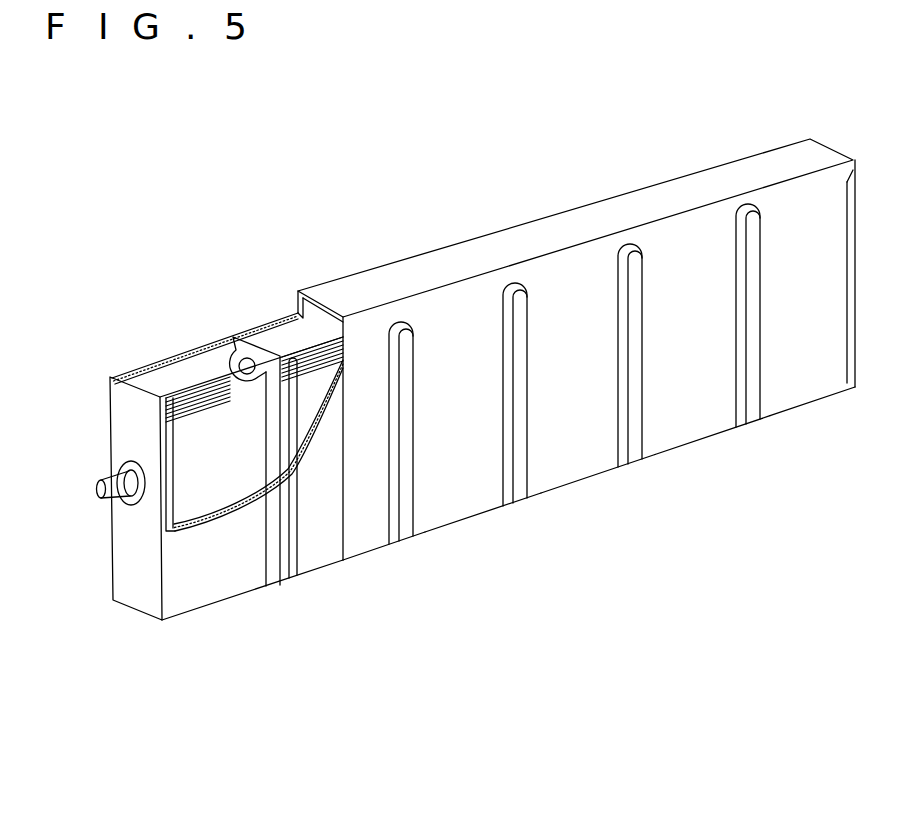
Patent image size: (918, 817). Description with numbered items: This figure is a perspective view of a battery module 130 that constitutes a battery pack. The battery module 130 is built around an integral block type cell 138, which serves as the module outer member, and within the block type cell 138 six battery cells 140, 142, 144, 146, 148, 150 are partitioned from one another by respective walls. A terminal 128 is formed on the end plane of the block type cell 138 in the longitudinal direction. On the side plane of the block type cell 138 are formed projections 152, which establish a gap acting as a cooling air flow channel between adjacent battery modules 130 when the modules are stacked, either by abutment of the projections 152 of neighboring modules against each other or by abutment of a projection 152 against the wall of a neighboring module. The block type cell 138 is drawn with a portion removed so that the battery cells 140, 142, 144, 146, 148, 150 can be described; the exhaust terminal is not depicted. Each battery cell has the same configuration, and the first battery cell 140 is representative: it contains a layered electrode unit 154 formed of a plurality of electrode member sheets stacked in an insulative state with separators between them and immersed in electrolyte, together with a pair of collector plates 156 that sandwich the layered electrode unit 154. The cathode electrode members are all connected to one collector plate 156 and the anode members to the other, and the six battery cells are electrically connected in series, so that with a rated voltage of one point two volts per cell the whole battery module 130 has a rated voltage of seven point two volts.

The terminal 128 is at (96, 499).
The battery module 130 is at (143, 680).
The block type cell 138 is at (355, 288).
The first battery cell 140 is at (252, 607).
The battery cell 142 is at (365, 574).
The battery cell 144 is at (482, 533).
The battery cell 146 is at (597, 495).
The battery cell 148 is at (711, 456).
The battery cell 150 is at (812, 421).
The projection 152 is at (291, 568).
The layered electrode unit 154 is at (181, 390).
The collector plate 156 is at (232, 356).